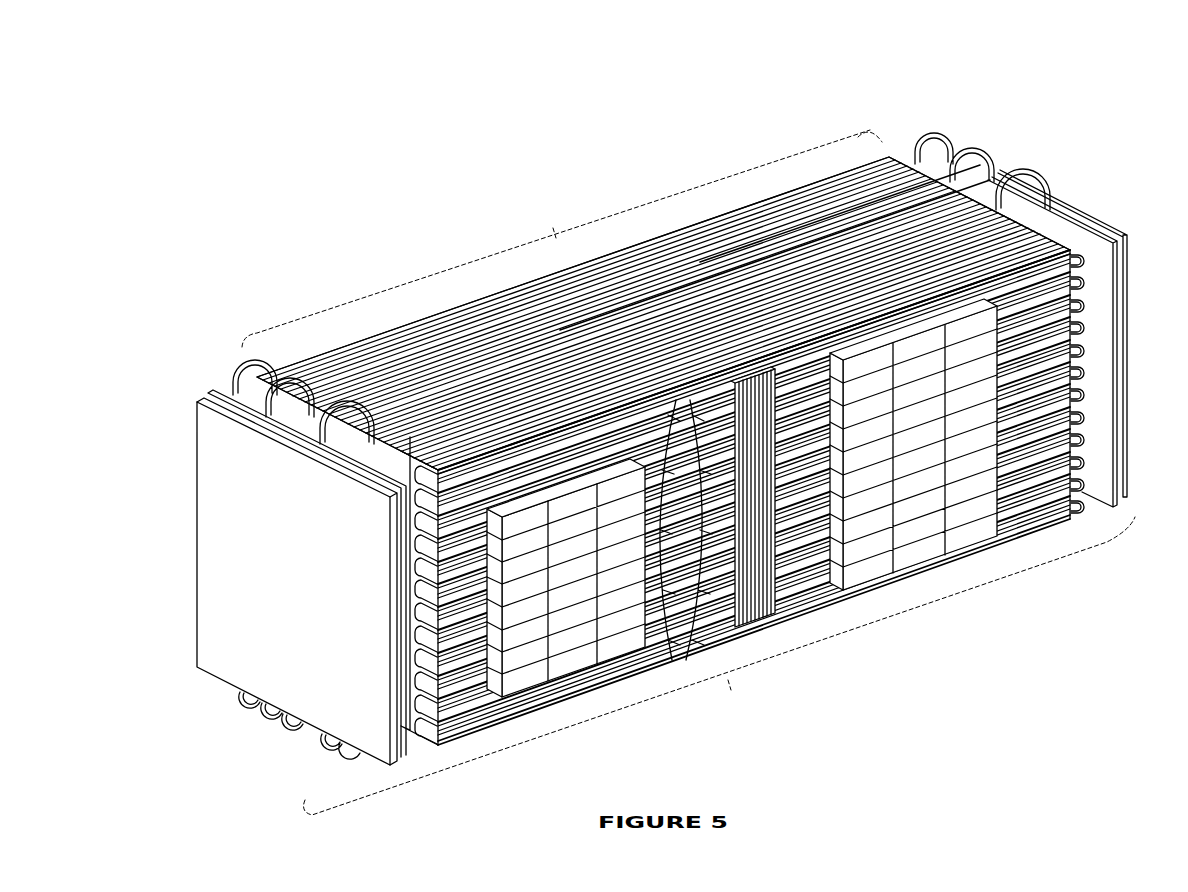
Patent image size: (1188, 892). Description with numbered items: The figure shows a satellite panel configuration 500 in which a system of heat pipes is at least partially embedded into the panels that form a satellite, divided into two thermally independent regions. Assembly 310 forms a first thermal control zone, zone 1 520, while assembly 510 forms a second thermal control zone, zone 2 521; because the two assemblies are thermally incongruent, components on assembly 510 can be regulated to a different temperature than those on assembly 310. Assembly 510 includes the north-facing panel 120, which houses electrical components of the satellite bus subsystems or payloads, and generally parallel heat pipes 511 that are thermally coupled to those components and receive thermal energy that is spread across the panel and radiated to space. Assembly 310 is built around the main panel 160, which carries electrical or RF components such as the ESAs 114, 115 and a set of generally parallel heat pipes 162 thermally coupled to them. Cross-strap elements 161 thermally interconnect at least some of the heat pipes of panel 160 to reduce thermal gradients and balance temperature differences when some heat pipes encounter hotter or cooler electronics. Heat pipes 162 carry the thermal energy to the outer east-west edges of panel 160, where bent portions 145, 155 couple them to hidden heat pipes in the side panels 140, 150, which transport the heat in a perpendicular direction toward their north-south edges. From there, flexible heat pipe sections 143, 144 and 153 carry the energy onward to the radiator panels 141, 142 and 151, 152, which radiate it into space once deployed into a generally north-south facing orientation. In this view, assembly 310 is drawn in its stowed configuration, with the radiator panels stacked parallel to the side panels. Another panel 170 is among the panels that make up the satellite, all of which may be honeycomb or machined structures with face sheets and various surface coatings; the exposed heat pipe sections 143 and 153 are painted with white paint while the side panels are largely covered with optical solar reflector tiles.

The configuration 500 is at (655, 427).
The assembly 310 is at (662, 428).
The panel 170 is at (413, 318).
The north-facing panel 120 is at (478, 317).
The heat pipes 511 is at (712, 212).
The assembly 510 is at (808, 168).
The main panel 160 is at (814, 603).
The ESA 114 is at (612, 543).
The ESA 115 is at (907, 408).
The cross-strap elements 161 is at (779, 497).
The heat pipes 162 is at (684, 600).
The side panel 140 is at (441, 481).
The bent portion 145 is at (418, 732).
The side panel 150 is at (1066, 264).
The bent portion 155 is at (1084, 502).
The radiator panel 151 is at (1129, 233).
The radiator panel 152 is at (1118, 278).
The flexible heat pipe section 153 is at (934, 132).
The radiator panel 142 is at (203, 391).
The radiator panel 141 is at (196, 428).
The flexible heat pipe section 143 is at (233, 377).
The flexible heat pipe section 144 is at (242, 707).
The zone 2 521 is at (562, 238).
The zone 1 520 is at (719, 666).